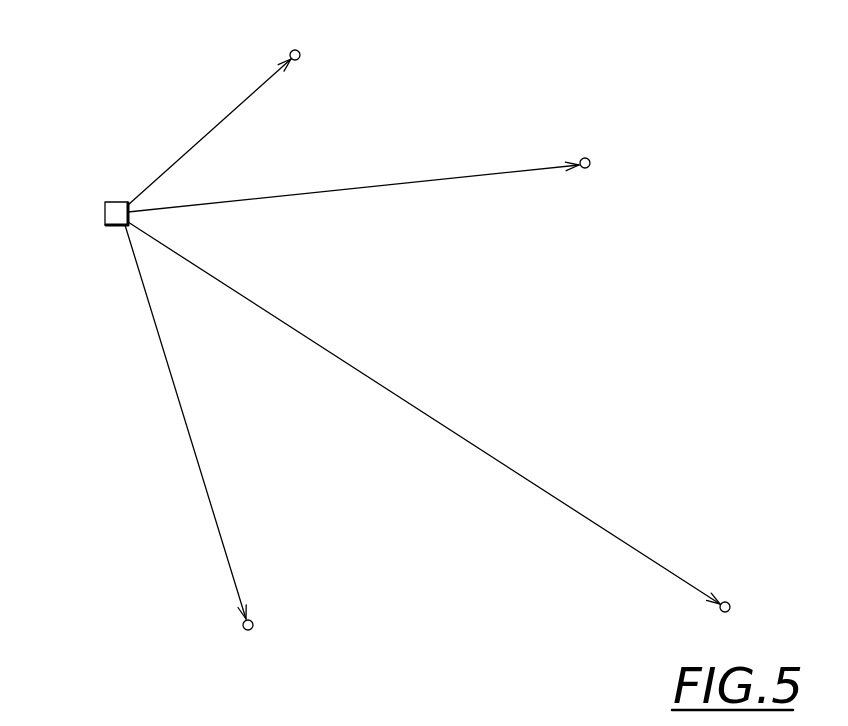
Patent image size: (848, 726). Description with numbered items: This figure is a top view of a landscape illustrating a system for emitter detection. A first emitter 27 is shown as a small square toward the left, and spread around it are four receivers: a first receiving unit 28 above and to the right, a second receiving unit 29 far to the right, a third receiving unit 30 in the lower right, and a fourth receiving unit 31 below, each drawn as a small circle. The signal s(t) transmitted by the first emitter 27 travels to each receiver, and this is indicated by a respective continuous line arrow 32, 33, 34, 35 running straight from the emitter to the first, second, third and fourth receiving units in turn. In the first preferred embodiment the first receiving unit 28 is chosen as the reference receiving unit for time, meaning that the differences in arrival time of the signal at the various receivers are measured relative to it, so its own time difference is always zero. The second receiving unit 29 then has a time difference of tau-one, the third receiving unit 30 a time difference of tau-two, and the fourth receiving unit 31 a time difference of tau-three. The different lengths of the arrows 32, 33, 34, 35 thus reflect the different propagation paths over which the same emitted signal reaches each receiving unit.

The first emitter 27 is at (110, 204).
The first receiving unit 28 is at (291, 52).
The second receiving unit 29 is at (590, 162).
The third receiving unit 30 is at (728, 602).
The fourth receiving unit 31 is at (245, 622).
The continuous line arrow 32 is at (196, 146).
The continuous line arrow 33 is at (477, 173).
The continuous line arrow 34 is at (540, 480).
The continuous line arrow 35 is at (178, 408).